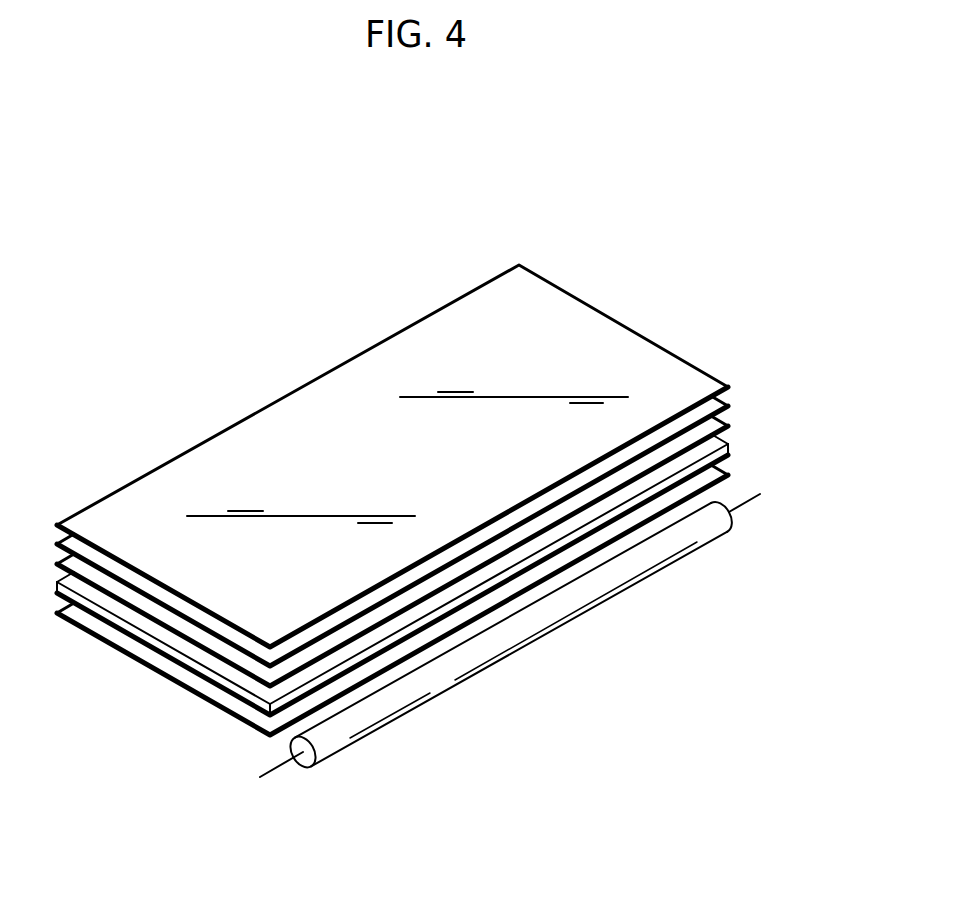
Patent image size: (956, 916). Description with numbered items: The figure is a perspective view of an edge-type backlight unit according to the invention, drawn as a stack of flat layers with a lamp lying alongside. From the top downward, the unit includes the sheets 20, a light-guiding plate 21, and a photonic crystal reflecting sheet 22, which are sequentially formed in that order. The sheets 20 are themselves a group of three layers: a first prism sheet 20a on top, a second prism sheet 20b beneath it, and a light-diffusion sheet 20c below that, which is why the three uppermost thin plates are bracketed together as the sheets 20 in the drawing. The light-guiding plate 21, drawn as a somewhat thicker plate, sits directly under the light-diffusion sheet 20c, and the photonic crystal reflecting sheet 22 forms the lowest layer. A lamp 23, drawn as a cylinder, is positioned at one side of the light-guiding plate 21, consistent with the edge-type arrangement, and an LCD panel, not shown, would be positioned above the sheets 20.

The sheets 20 is at (449, 475).
The first prism sheet 20a is at (724, 386).
The second prism sheet 20b is at (724, 406).
The light-diffusion sheet 20c is at (724, 426).
The light-guiding plate 21 is at (724, 448).
The photonic crystal reflecting sheet 22 is at (724, 473).
The lamp 23 is at (520, 640).